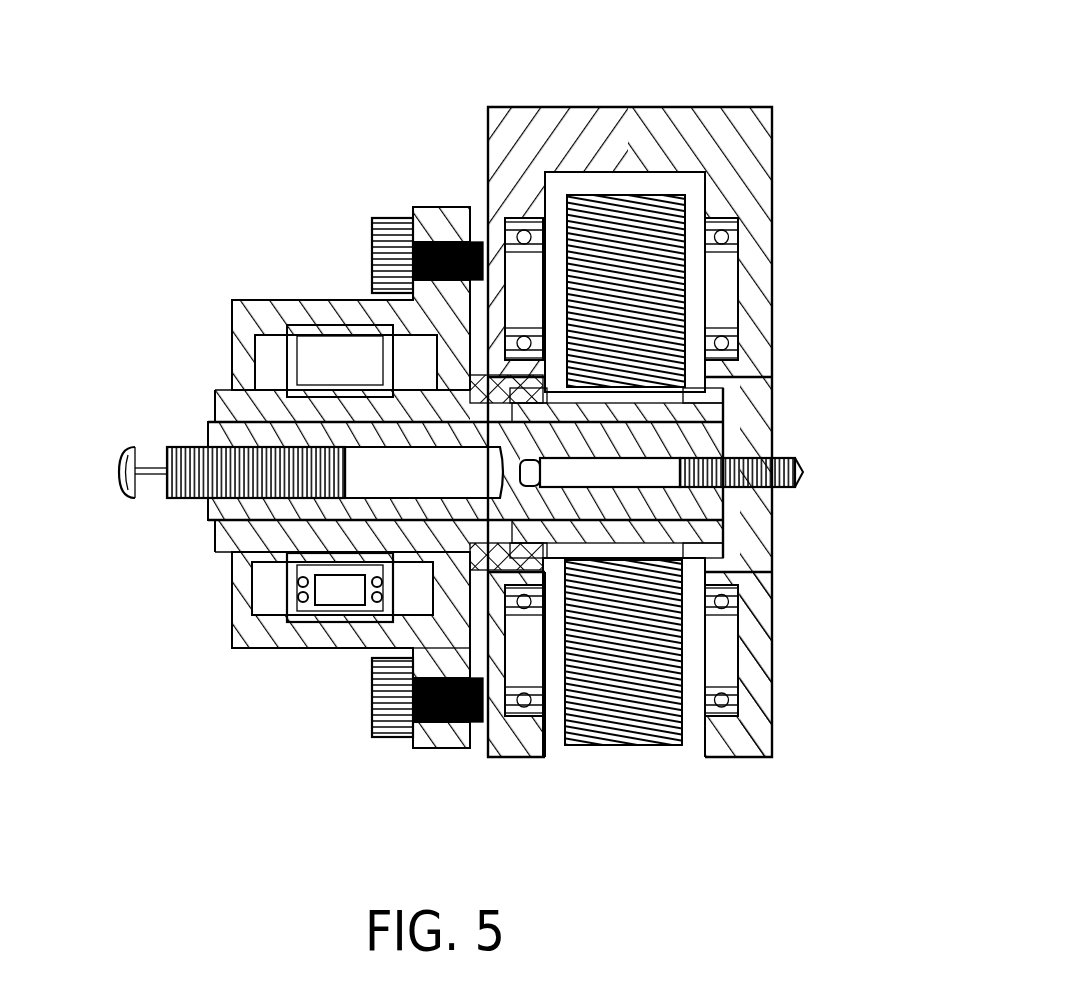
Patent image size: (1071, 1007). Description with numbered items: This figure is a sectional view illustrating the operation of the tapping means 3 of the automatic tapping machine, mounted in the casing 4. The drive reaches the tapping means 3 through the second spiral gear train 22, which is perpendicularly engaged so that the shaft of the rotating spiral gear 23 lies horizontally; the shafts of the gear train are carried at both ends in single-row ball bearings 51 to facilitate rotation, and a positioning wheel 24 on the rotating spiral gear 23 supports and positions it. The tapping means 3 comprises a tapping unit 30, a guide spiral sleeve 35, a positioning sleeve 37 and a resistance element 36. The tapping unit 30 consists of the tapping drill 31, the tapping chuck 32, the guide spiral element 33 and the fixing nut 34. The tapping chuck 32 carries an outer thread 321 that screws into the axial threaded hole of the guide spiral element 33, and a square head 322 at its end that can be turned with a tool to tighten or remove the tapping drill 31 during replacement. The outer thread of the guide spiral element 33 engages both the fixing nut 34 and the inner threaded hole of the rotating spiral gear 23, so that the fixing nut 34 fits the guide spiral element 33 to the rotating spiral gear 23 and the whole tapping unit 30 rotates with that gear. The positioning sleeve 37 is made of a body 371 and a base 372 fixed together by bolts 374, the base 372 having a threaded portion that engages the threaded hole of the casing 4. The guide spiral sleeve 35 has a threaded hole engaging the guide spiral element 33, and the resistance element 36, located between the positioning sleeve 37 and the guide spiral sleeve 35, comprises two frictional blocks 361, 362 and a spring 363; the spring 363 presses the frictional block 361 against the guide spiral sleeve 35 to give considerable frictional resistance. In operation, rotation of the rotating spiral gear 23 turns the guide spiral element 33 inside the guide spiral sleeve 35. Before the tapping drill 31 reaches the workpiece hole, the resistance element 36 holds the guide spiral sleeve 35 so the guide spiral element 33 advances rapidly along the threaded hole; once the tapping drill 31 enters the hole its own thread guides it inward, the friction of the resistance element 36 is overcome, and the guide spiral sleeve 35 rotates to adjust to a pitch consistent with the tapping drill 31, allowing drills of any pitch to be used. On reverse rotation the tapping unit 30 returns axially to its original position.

The tapping means 3 is at (418, 490).
The casing 4 is at (740, 123).
The second spiral gear train 22 is at (643, 752).
The rotating spiral gear 23 is at (723, 403).
The positioning wheel 24 is at (636, 205).
The tapping unit 30 is at (272, 353).
The tapping drill 31 is at (797, 468).
The tapping chuck 32 is at (194, 442).
The guide spiral element 33 is at (222, 504).
The fixing nut 34 is at (468, 338).
The guide spiral sleeve 35 is at (268, 405).
The resistance element 36 is at (260, 693).
The positioning sleeve 37 is at (334, 429).
The single-row ball bearing 51 is at (515, 222).
The outer thread 321 is at (125, 450).
The square head 322 is at (165, 500).
The frictional block 361 is at (287, 562).
The frictional block 362 is at (285, 622).
The spring 363 is at (287, 615).
The body 371 is at (258, 648).
The base 372 is at (463, 747).
The bolts 374 is at (391, 218).